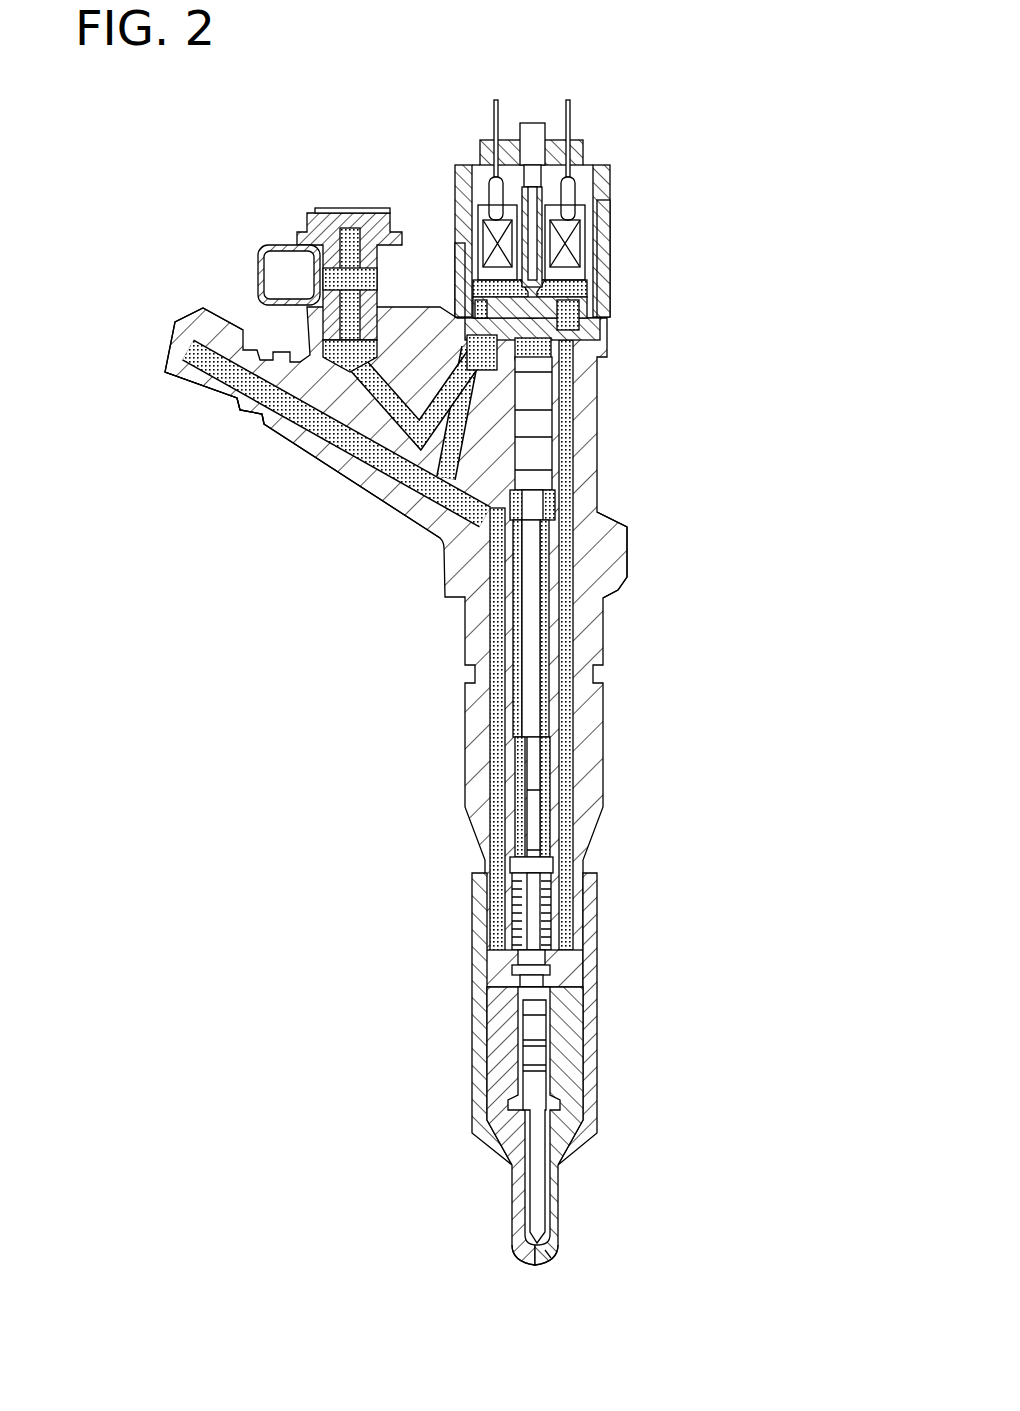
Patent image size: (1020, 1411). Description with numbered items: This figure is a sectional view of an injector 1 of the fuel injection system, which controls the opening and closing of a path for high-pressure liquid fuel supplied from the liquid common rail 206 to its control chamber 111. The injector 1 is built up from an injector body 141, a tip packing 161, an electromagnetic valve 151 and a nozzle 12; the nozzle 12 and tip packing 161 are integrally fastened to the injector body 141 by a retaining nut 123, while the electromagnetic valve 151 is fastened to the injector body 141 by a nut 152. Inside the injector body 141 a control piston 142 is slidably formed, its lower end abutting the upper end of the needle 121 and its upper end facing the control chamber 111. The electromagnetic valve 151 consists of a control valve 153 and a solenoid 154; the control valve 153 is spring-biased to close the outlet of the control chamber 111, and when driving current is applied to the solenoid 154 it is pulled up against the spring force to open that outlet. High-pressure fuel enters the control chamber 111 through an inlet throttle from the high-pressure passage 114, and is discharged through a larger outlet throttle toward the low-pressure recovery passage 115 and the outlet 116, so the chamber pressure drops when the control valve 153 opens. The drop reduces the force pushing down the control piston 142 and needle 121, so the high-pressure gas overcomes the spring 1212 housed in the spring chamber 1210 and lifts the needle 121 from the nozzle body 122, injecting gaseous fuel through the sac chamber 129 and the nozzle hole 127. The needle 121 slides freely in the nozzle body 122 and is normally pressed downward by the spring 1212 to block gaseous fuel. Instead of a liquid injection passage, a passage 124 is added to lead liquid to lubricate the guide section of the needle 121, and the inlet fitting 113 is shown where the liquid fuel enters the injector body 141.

The injector 1 is at (632, 98).
The nozzle 12 is at (592, 1202).
The control chamber 111 is at (545, 339).
The fuel inlet fitting 113 is at (250, 420).
The high-pressure passage 114 is at (428, 468).
The low-pressure recovery passage 115 is at (575, 557).
The outlet 116 is at (305, 225).
The needle 121 is at (540, 1053).
The nozzle body 122 is at (555, 1088).
The retaining nut 123 is at (490, 1135).
The passage 124 is at (497, 1000).
The nozzle hole 127 is at (533, 1261).
The sac chamber 129 is at (550, 1258).
The injector body 141 is at (470, 628).
The control piston 142 is at (540, 450).
The electromagnetic valve 151 is at (603, 235).
The nut 152 is at (607, 193).
The control valve 153 is at (533, 312).
The solenoid 154 is at (457, 230).
The tip packing 161 is at (495, 962).
The liquid common rail 206 is at (168, 330).
The spring chamber 1210 is at (540, 905).
The spring 1212 is at (560, 868).